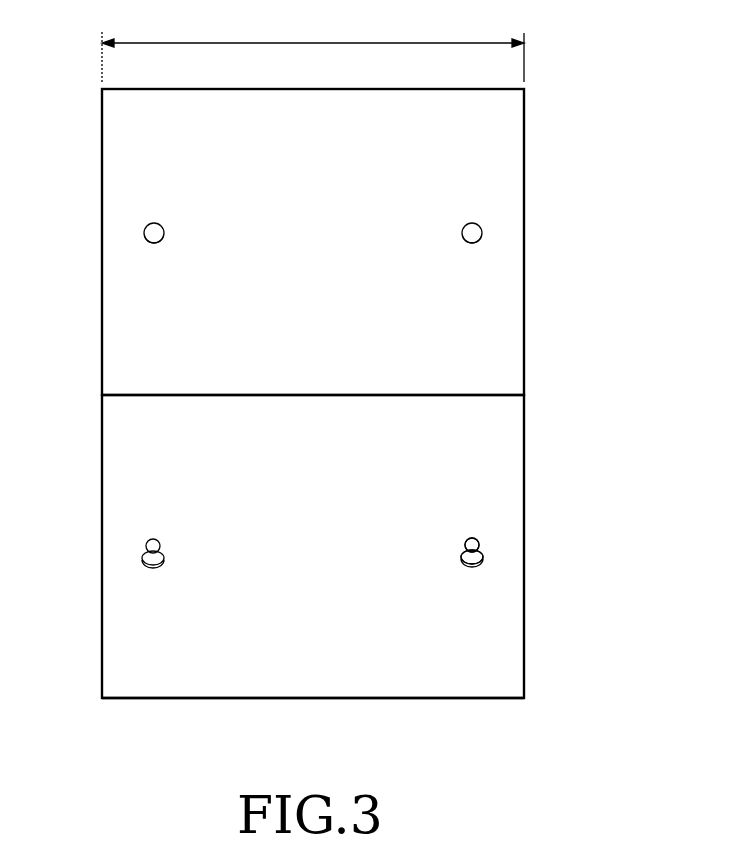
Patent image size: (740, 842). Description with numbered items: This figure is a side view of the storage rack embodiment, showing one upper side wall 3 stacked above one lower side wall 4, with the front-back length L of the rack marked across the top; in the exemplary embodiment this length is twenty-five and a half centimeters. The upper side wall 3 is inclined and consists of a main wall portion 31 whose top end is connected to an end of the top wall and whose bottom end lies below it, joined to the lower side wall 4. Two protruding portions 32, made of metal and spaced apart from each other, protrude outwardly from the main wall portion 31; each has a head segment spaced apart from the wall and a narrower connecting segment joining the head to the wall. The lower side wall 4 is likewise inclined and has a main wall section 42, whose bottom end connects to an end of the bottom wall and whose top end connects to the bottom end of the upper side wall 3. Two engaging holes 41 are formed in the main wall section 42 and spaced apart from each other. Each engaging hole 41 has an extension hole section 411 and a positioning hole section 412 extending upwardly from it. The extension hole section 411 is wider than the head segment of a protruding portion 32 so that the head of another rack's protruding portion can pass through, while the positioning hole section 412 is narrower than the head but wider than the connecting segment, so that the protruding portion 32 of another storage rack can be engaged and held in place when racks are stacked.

The front-back length L is at (313, 47).
The upper side wall 3 is at (536, 124).
The main wall portion 31 is at (493, 168).
The protruding portion 32 is at (156, 236).
The lower side wall 4 is at (543, 476).
The engaging hole 41 is at (148, 547).
The extension hole section 411 is at (475, 560).
The positioning hole section 412 is at (477, 543).
The main wall section 42 is at (512, 653).